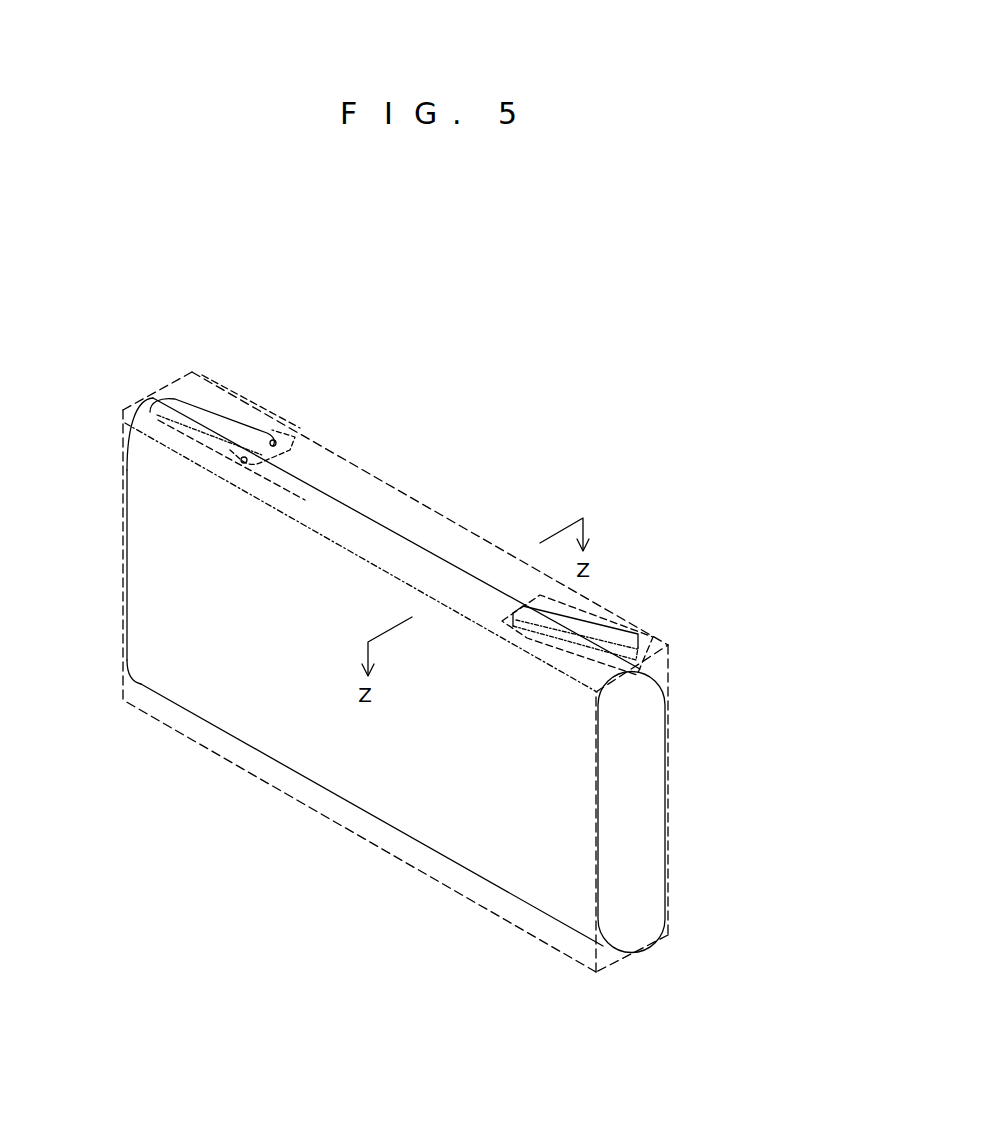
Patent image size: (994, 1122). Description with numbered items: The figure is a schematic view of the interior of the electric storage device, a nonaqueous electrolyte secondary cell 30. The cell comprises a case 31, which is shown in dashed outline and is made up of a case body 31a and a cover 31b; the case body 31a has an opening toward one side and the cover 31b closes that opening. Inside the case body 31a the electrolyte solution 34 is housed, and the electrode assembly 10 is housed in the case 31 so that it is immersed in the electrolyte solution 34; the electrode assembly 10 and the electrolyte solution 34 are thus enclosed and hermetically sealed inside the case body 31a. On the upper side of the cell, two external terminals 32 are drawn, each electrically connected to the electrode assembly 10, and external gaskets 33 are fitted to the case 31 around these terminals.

The electrode assembly 10 is at (445, 578).
The nonaqueous electrolyte secondary cell 30 is at (455, 450).
The case 31 is at (474, 675).
The case body 31a is at (640, 748).
The cover 31b is at (668, 650).
The external terminal 32 is at (214, 388).
The external gasket 33 is at (127, 445).
The electrolyte solution 34 is at (425, 860).